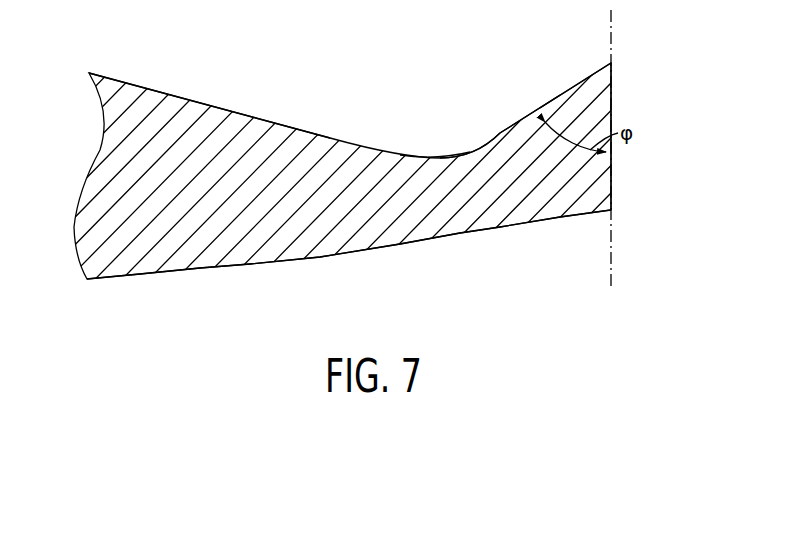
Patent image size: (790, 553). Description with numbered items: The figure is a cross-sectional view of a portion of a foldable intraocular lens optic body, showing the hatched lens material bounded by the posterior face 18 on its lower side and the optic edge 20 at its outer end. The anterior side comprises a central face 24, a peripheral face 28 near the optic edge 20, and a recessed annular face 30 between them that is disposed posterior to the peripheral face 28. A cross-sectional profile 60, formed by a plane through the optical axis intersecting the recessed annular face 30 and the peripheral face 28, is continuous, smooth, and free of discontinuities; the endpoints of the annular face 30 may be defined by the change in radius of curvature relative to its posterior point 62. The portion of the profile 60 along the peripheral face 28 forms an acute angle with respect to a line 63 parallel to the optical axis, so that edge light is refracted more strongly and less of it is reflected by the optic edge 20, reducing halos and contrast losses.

The posterior face 18 is at (183, 273).
The optic edge 20 is at (613, 107).
The central face 24 is at (200, 102).
The peripheral face 28 is at (522, 92).
The recessed annular face 30 is at (448, 133).
The cross-sectional profile 60 is at (567, 78).
The posterior point 62 is at (435, 157).
The line 63 is at (613, 45).